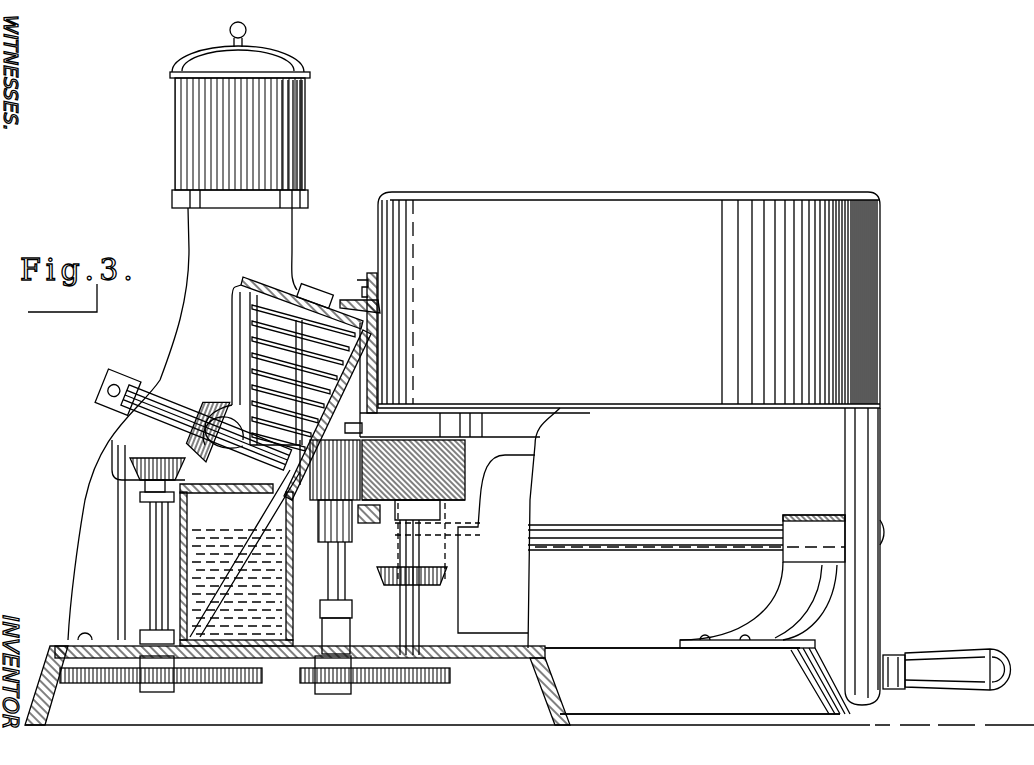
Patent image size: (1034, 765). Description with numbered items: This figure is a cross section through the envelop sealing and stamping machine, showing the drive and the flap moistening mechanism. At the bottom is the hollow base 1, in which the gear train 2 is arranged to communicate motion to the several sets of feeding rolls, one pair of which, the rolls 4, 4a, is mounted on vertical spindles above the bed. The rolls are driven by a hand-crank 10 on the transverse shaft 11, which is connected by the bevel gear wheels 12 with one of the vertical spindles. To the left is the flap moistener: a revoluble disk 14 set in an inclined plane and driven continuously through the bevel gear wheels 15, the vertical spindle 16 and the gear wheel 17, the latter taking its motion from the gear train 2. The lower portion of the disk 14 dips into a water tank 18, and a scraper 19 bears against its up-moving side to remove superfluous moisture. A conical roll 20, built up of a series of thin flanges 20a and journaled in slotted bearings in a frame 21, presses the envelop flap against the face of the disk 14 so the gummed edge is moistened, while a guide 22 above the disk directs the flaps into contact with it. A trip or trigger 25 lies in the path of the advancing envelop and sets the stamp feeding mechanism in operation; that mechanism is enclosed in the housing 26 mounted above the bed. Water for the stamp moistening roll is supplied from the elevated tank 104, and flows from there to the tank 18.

The base 1 is at (672, 702).
The gear train 2 is at (367, 684).
The feeding roll 4 is at (232, 302).
The feeding roll 4a is at (462, 458).
The hand-crank 10 is at (970, 654).
The transverse shaft 11 is at (655, 549).
The bevel gear wheels 12 is at (444, 582).
The revoluble disk 14 is at (316, 393).
The bevel gear wheels 15 is at (200, 420).
The vertical spindle 16 is at (150, 528).
The gear wheel 17 is at (216, 684).
The water tank 18 is at (181, 515).
The scraper 19 is at (240, 553).
The conical roll 20 is at (296, 290).
The thin flanges 20a is at (252, 340).
The frame 21 is at (247, 283).
The guide 22 is at (352, 303).
The trip or trigger 25 is at (345, 429).
The housing 26 is at (508, 201).
The elevated tank 104 is at (298, 137).